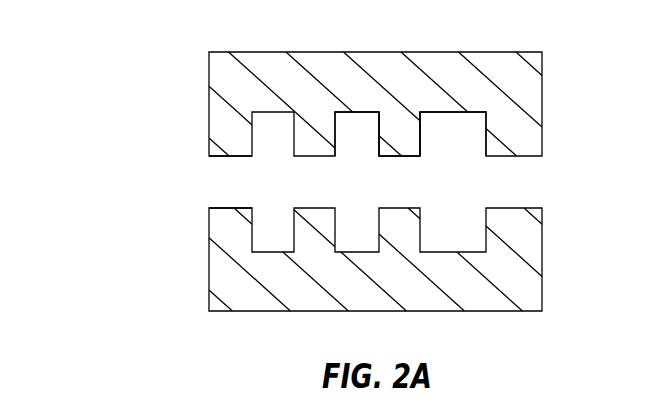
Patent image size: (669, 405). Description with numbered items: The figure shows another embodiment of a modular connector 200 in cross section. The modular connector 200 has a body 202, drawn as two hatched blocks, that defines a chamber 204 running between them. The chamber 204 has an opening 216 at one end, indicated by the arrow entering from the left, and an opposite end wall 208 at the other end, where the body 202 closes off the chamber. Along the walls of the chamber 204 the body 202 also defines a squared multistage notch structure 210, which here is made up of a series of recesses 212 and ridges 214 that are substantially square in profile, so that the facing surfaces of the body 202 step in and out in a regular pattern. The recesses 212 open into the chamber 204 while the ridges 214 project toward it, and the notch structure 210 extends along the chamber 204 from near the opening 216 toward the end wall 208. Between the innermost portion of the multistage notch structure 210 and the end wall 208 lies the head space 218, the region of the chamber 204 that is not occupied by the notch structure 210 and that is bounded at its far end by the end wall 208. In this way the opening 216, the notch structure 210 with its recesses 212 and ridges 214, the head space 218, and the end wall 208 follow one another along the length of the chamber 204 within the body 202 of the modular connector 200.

The modular connector 200 is at (140, 268).
The body 202 is at (238, 81).
The chamber 204 is at (294, 190).
The end wall 208 is at (478, 215).
The squared multistage notch structure 210 is at (357, 180).
The recesses 212 is at (356, 135).
The ridges 214 is at (400, 156).
The opening 216 is at (180, 184).
The head space 218 is at (470, 178).